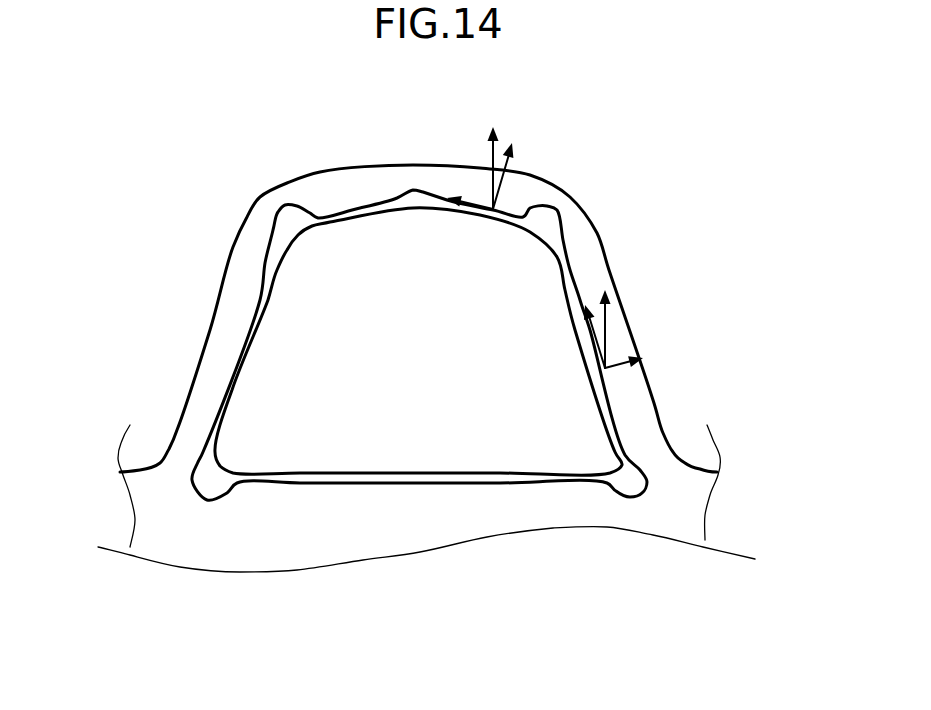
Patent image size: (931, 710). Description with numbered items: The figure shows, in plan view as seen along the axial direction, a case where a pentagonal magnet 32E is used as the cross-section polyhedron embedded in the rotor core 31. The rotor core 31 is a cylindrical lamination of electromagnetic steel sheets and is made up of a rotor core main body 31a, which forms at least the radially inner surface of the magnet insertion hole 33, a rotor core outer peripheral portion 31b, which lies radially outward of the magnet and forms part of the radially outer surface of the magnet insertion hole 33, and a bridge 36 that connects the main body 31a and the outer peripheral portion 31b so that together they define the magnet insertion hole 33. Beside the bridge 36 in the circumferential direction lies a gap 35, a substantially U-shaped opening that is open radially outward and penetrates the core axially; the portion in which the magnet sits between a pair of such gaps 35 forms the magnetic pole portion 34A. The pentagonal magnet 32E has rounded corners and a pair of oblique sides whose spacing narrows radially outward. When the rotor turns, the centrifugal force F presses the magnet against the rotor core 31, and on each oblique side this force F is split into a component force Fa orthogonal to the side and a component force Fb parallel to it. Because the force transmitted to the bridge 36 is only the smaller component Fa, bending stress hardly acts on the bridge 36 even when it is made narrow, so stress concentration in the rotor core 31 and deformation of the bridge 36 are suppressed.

The rotor core 31 is at (678, 495).
The rotor core main body 31a is at (242, 527).
The rotor core outer peripheral portion 31b is at (413, 173).
The pentagonal magnet 32E is at (337, 267).
The magnet insertion hole 33 is at (375, 483).
The magnetic pole portion 34A is at (353, 168).
The gap 35 is at (150, 370).
The bridge 36 is at (223, 357).
The centrifugal force F is at (492, 203).
The component force Fa is at (497, 190).
The component force Fb is at (485, 214).